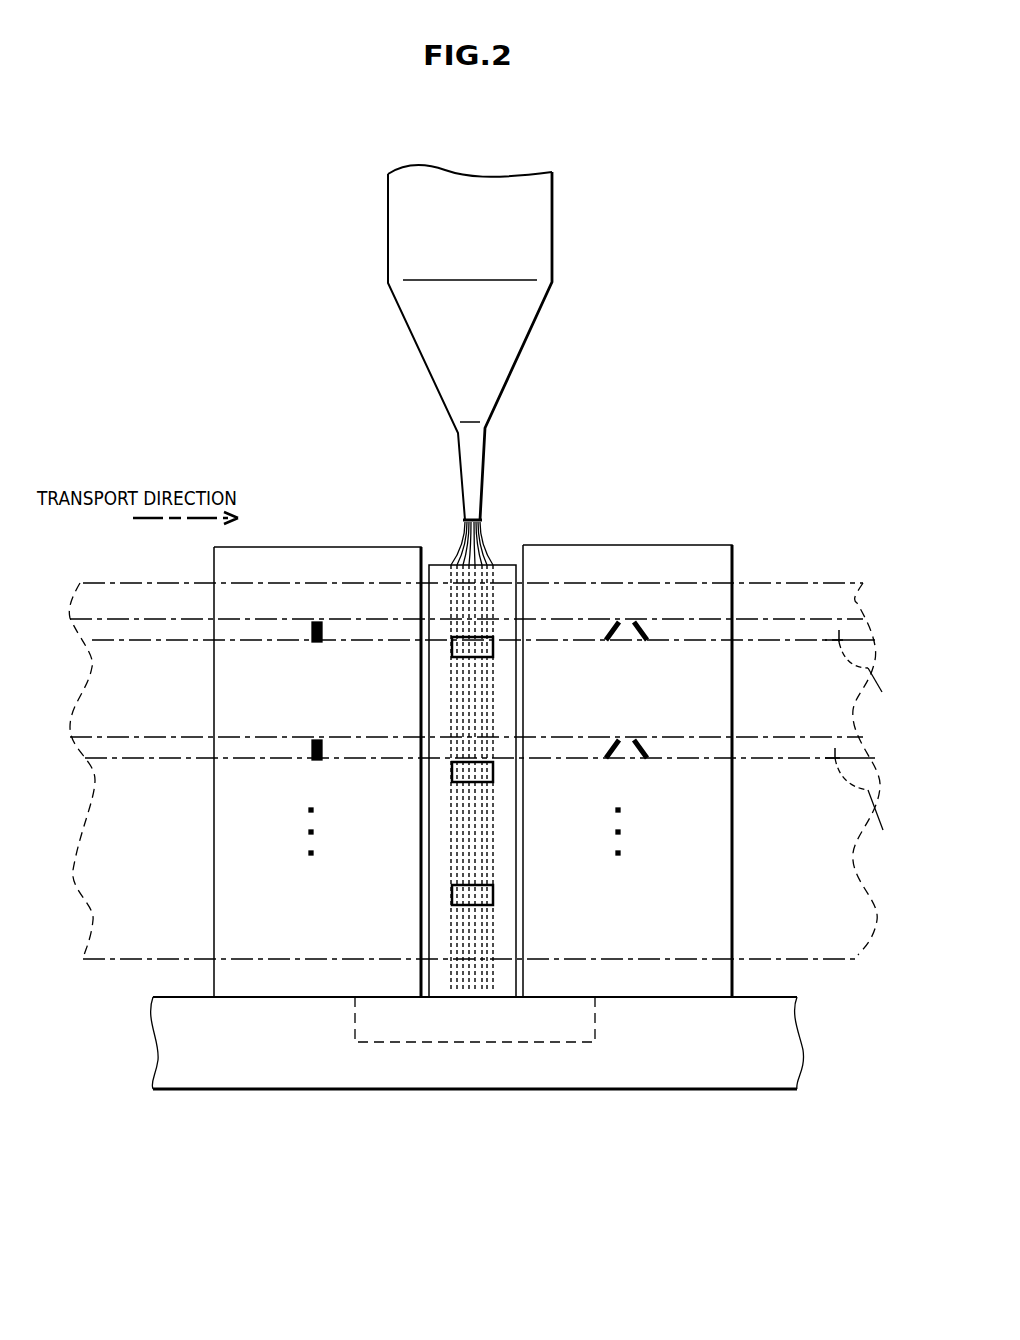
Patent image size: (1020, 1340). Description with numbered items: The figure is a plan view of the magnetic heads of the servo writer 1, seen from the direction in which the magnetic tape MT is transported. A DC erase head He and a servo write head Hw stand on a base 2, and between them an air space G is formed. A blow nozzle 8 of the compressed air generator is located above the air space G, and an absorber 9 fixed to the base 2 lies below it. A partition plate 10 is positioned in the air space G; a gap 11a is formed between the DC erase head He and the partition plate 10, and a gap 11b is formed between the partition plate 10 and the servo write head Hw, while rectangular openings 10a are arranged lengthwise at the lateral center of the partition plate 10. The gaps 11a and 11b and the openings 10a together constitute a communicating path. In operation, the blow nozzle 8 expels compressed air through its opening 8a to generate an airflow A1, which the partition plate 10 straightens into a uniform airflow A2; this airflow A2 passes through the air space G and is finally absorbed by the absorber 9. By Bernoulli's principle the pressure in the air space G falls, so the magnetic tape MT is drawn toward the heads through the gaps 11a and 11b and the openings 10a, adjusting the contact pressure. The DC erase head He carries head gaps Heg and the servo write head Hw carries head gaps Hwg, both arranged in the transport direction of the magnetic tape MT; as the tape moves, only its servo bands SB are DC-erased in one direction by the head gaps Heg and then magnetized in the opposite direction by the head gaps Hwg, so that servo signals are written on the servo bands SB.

The servo writer 1 is at (275, 282).
The base 2 is at (720, 1072).
The blow nozzle 8 is at (553, 257).
The opening 8a is at (438, 553).
The absorber 9 is at (497, 1023).
The partition plate 10 is at (442, 978).
The openings 10a is at (477, 648).
The gap 11a is at (422, 920).
The gap 11b is at (520, 920).
The DC erase head He is at (298, 546).
The head gaps Heg is at (322, 642).
The servo write head Hw is at (643, 545).
The head gaps Hwg is at (635, 640).
The air space G is at (465, 522).
The airflow A1 is at (480, 522).
The airflow A2 is at (500, 598).
The magnetic tape MT is at (776, 582).
The servo bands SB is at (865, 743).